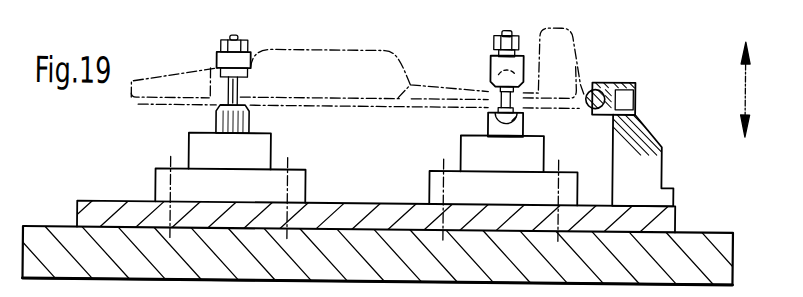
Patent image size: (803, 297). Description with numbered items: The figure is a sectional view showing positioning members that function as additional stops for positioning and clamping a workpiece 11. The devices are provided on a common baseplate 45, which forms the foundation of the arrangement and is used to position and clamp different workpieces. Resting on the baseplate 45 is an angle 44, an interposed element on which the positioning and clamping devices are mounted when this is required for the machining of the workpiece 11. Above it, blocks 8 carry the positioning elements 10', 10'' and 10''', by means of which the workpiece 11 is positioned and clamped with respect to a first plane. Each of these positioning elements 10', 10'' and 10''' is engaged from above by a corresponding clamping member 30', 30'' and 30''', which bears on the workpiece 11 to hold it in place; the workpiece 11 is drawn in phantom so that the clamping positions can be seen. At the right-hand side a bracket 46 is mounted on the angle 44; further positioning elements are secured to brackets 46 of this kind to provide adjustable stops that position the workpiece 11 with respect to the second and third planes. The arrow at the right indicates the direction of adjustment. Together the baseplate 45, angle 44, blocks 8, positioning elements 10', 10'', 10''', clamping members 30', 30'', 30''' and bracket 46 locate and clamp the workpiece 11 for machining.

The support block 8 is at (290, 170).
The workpiece 11 is at (359, 84).
The clamping bolt head 30' is at (186, 69).
The clamping bolt head 30'' is at (186, 69).
The clamping bolt head with ball 30''' is at (479, 71).
The positioning element 10' is at (189, 120).
The positioning element 10'' is at (189, 120).
The positioning element 10''' is at (534, 125).
The angle 44 is at (646, 209).
The baseplate 45 is at (708, 236).
The bracket 46 is at (642, 134).